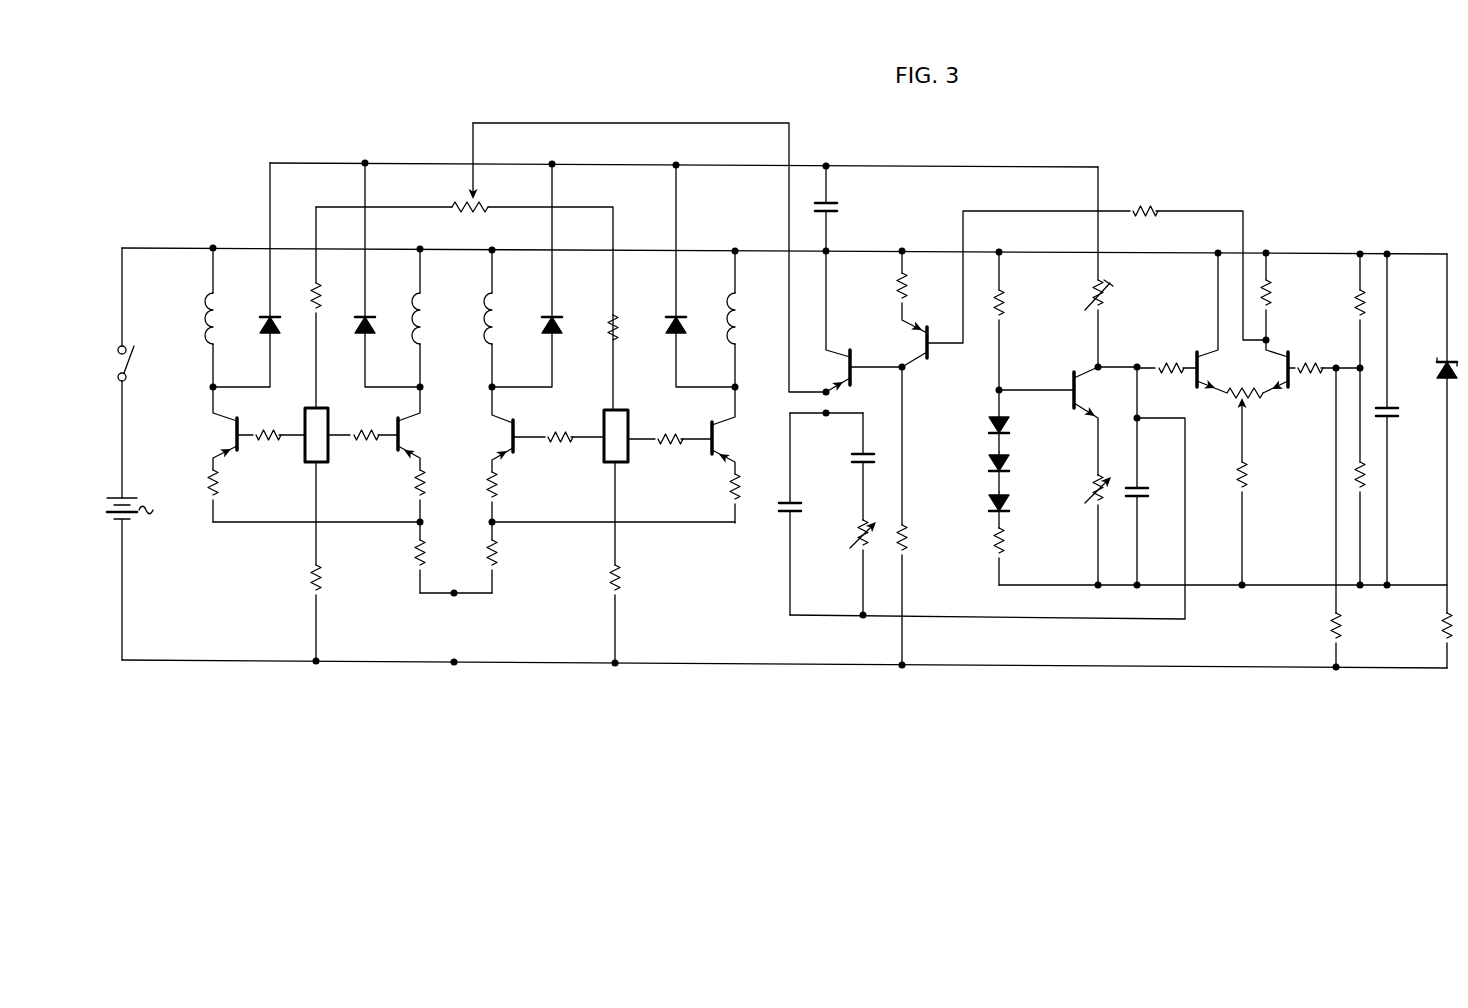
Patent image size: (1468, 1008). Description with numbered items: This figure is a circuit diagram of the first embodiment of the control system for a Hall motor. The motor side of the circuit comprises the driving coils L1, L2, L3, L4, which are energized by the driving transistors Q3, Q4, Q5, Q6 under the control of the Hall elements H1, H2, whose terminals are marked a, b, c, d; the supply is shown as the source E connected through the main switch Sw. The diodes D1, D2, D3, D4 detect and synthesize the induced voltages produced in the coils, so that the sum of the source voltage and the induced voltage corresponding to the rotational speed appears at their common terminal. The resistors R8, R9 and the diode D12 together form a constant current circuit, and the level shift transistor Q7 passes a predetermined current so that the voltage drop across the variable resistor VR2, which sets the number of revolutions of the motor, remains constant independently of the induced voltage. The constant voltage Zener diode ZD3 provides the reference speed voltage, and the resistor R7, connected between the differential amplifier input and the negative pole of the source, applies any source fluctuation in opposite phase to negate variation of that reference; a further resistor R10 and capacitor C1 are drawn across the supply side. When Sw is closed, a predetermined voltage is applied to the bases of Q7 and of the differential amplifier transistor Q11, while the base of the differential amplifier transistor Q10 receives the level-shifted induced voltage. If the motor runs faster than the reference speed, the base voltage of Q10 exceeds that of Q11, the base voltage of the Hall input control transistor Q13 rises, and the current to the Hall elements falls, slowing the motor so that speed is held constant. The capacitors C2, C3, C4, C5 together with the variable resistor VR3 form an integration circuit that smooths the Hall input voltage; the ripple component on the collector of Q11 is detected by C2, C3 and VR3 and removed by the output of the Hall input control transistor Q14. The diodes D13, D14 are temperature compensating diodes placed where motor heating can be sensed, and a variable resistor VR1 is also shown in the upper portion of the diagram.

The main switch Sw is at (137, 342).
The power source (battery) E is at (138, 579).
The driving coil L1 is at (204, 338).
The driving coil L2 is at (500, 309).
The driving coil L3 is at (428, 312).
The driving coil L4 is at (741, 309).
The diode D1 is at (272, 313).
The diode D2 is at (554, 315).
The diode D3 is at (367, 313).
The diode D4 is at (679, 315).
The Hall element H1 is at (318, 406).
The Hall element H2 is at (623, 408).
The Hall element terminal a is at (292, 422).
The Hall element terminal b is at (339, 422).
The Hall element terminal c is at (587, 424).
The Hall element terminal d is at (641, 425).
The driving transistor Q3 is at (228, 438).
The driving transistor Q4 is at (414, 434).
The driving transistor Q5 is at (502, 442).
The driving transistor Q6 is at (728, 439).
The level shift transistor Q7 is at (1084, 408).
The differential amplifier transistor Q10 is at (1192, 352).
The differential amplifier transistor Q11 is at (1284, 352).
The Hall input control transistor Q13 is at (923, 326).
The Hall input control transistor Q14 is at (844, 349).
The variable resistor VR1 is at (462, 194).
The variable resistor VR2 is at (1089, 492).
The variable resistor VR3 is at (839, 567).
The resistor R7 is at (1328, 632).
The resistor R8 is at (1008, 305).
The resistor R9 is at (989, 541).
The resistor R10 is at (1441, 632).
The capacitor C1 is at (1399, 418).
The capacitor C2 is at (800, 506).
The capacitor C3 is at (853, 455).
The capacitor C4 is at (840, 212).
The capacitor C5 is at (1150, 492).
The diode D12 is at (988, 428).
The temperature compensating diode D13 is at (988, 464).
The temperature compensating diode D14 is at (988, 502).
The constant voltage Zener diode ZD3 is at (1442, 358).